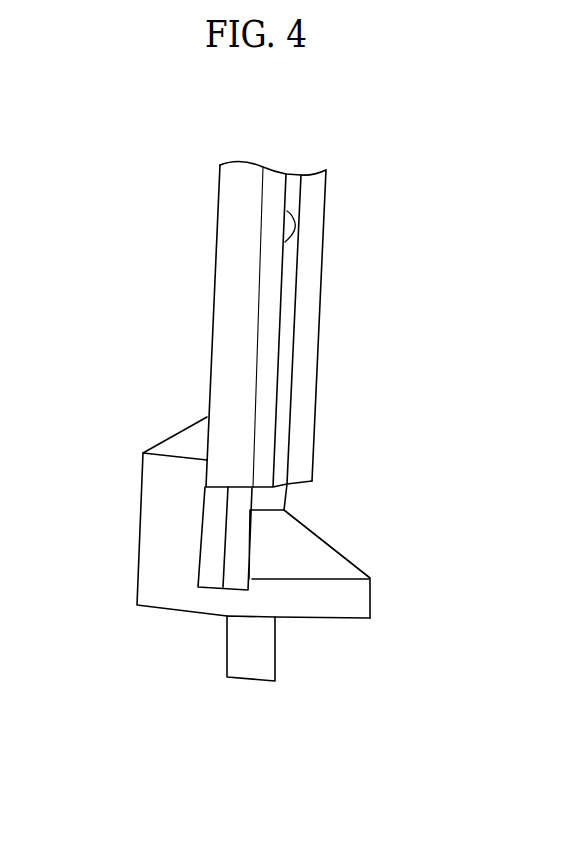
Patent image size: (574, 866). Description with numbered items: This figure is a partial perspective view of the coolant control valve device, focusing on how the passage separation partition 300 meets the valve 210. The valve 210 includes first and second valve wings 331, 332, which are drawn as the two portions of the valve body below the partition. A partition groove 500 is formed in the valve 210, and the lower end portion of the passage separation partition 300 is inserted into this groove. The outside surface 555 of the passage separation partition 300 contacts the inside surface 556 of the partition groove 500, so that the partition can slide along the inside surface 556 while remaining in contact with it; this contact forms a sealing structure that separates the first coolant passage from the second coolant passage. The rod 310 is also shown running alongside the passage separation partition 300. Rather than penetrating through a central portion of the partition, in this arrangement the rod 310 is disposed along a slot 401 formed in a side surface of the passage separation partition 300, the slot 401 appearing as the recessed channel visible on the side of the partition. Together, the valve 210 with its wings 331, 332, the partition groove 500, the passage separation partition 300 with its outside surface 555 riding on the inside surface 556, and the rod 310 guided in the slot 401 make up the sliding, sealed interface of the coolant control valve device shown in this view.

The passage separation partition 300 is at (322, 240).
The rod 310 is at (287, 362).
The slot 401 is at (285, 242).
The partition groove 500 is at (216, 532).
The outside surface 555 is at (207, 440).
The inside surface 556 is at (202, 503).
The first valve wing 331 is at (317, 563).
The second valve wing 332 is at (165, 568).
The valve 210 is at (352, 756).